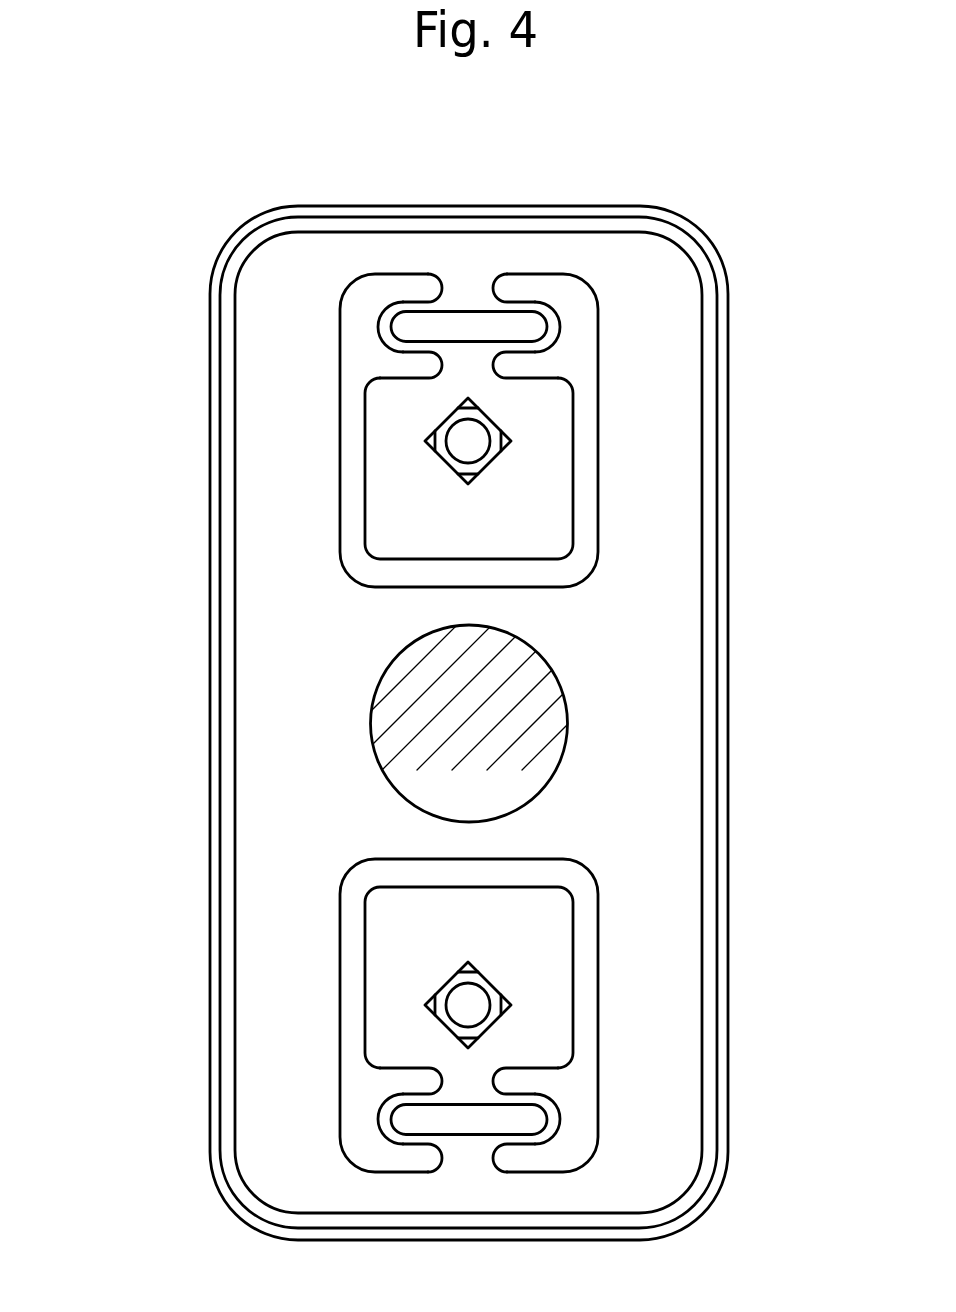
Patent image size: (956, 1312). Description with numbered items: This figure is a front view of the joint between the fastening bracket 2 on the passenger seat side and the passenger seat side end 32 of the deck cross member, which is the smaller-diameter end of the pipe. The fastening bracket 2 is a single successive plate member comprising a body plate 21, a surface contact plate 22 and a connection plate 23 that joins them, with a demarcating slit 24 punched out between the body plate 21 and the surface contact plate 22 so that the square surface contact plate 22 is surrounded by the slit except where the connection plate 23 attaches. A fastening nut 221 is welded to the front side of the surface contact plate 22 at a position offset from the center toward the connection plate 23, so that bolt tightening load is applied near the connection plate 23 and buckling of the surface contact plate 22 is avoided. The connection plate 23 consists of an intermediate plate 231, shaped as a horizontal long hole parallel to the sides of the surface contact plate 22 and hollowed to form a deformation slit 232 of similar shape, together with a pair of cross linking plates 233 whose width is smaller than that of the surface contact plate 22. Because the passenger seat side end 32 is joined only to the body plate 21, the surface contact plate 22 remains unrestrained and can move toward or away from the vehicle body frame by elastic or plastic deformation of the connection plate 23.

The fastening bracket 2 is at (214, 706).
The body plate 21 is at (682, 732).
The surface contact plate 22 is at (425, 723).
The fastening nut 221 is at (492, 460).
The connection plate 23 is at (315, 724).
The intermediate plate 231 is at (397, 303).
The deformation slit 232 is at (389, 325).
The cross linking plate 233 is at (450, 288).
The demarcating slit 24 is at (356, 535).
The passenger seat side end 32 is at (371, 722).